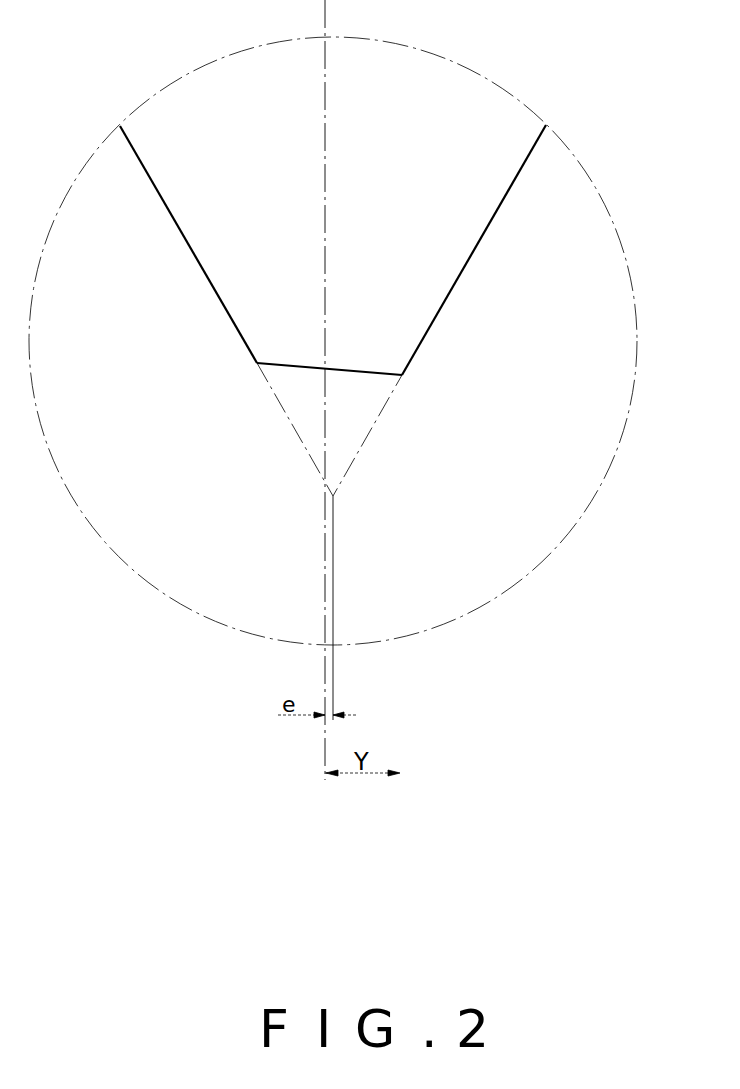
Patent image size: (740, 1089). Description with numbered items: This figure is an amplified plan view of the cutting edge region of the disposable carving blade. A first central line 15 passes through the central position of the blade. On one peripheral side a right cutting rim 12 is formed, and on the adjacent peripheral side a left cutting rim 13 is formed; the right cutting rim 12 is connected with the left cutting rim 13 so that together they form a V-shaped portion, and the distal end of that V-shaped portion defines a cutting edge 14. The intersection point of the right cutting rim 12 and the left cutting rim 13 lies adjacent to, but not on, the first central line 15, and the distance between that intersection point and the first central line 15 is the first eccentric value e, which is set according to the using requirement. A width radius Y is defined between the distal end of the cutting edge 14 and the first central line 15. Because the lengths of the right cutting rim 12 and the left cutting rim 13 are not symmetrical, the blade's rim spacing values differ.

The right cutting rim 12 is at (451, 293).
The left cutting rim 13 is at (197, 262).
The cutting edge 14 is at (310, 370).
The first central line 15 is at (325, 128).